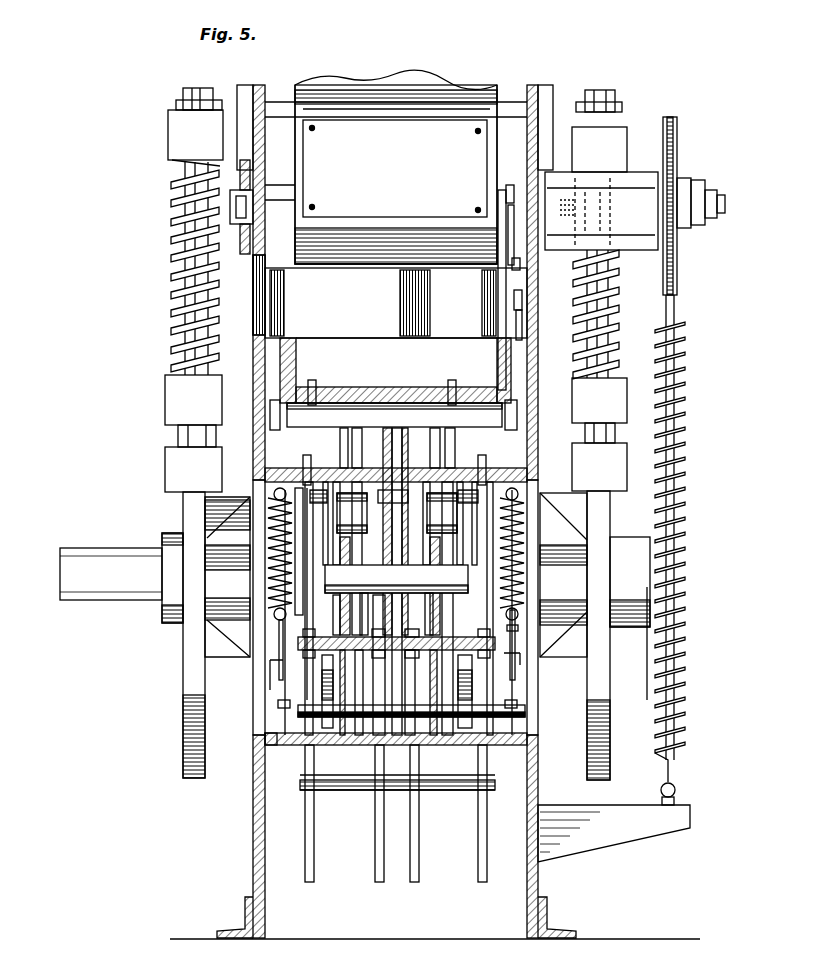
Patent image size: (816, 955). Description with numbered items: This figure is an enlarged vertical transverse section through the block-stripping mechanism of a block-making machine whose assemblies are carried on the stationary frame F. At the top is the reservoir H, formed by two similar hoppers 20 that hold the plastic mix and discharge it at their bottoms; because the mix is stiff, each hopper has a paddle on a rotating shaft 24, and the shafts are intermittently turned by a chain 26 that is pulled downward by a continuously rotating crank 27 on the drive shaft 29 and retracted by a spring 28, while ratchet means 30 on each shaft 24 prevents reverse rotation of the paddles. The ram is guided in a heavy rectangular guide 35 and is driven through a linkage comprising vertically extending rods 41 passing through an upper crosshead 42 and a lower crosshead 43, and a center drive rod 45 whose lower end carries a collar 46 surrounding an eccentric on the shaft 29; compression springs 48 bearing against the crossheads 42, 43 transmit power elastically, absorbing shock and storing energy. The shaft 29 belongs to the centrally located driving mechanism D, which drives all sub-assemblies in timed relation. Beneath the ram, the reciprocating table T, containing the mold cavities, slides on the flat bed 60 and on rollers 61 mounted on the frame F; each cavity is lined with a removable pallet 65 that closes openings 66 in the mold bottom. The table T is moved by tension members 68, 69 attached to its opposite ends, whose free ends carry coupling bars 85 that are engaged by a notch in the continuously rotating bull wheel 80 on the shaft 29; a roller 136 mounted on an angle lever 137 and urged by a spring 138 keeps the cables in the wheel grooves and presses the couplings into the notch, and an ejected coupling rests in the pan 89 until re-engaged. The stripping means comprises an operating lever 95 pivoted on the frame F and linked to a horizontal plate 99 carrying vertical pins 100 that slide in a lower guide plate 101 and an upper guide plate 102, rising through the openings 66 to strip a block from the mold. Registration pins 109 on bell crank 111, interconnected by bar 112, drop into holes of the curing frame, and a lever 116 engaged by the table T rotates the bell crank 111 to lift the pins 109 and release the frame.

The hopper 20 is at (390, 80).
The reservoir H is at (440, 78).
The frame F is at (250, 840).
The vertically extending rods 41 is at (185, 94).
The upper crosshead 42 is at (170, 146).
The center drive rod 45 is at (176, 212).
The compression spring 48 is at (176, 287).
The lower crosshead 43 is at (170, 392).
The collar 46 is at (170, 494).
The driving mechanism D is at (158, 540).
The drive shaft 29 is at (112, 592).
The ratchet means 30 is at (628, 195).
The chain 26 is at (678, 262).
The rotating shaft 24 is at (725, 202).
The spring 28 is at (690, 428).
The crank 27 is at (646, 660).
The rectangular guide 35 is at (504, 192).
The bar 112 is at (508, 210).
The registration pins 109 is at (512, 272).
The bell crank 111 is at (512, 302).
The lever 116 is at (514, 327).
The table T is at (355, 356).
The removable pallet 65 is at (385, 387).
The openings 66 is at (313, 385).
The flat bed 60 is at (440, 403).
The rollers 61 is at (270, 414).
The tension member 69 is at (356, 435).
The tension member 68 is at (396, 438).
The upper guide plate 102 is at (498, 466).
The angle lever 137 is at (300, 510).
The spring 138 is at (266, 556).
The roller 136 is at (470, 572).
The coupling member 85 is at (392, 598).
The bull wheel 80 is at (455, 612).
The horizontal plate 99 is at (300, 648).
The second operating lever 95 is at (322, 690).
The lower guide plate 101 is at (278, 745).
The pan 89 is at (448, 790).
The pins 100 is at (375, 845).